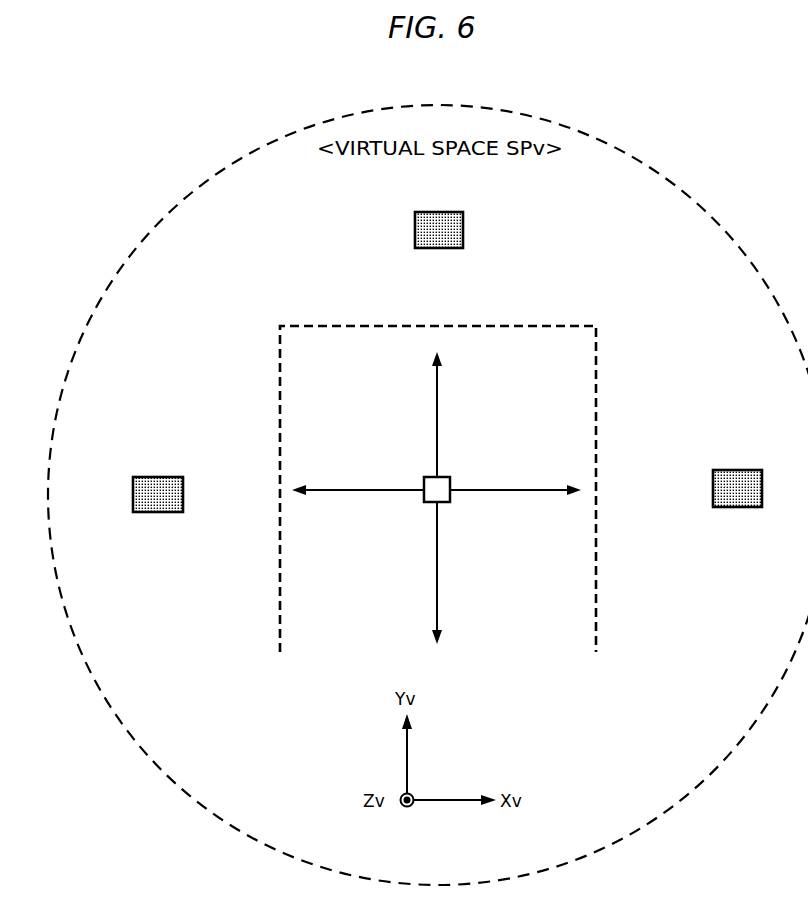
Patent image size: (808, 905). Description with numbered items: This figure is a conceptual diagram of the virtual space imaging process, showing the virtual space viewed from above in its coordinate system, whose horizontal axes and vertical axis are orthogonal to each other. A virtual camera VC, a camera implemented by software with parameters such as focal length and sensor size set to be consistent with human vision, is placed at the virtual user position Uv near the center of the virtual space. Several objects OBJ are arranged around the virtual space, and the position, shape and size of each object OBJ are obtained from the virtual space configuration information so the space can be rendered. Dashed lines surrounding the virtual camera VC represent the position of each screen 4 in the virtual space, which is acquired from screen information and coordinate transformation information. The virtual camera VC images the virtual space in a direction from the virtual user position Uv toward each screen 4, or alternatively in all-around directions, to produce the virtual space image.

The screen 4 is at (358, 325).
The object OBJ is at (463, 230).
The virtual camera VC is at (436, 498).
The virtual user position Uv is at (437, 489).